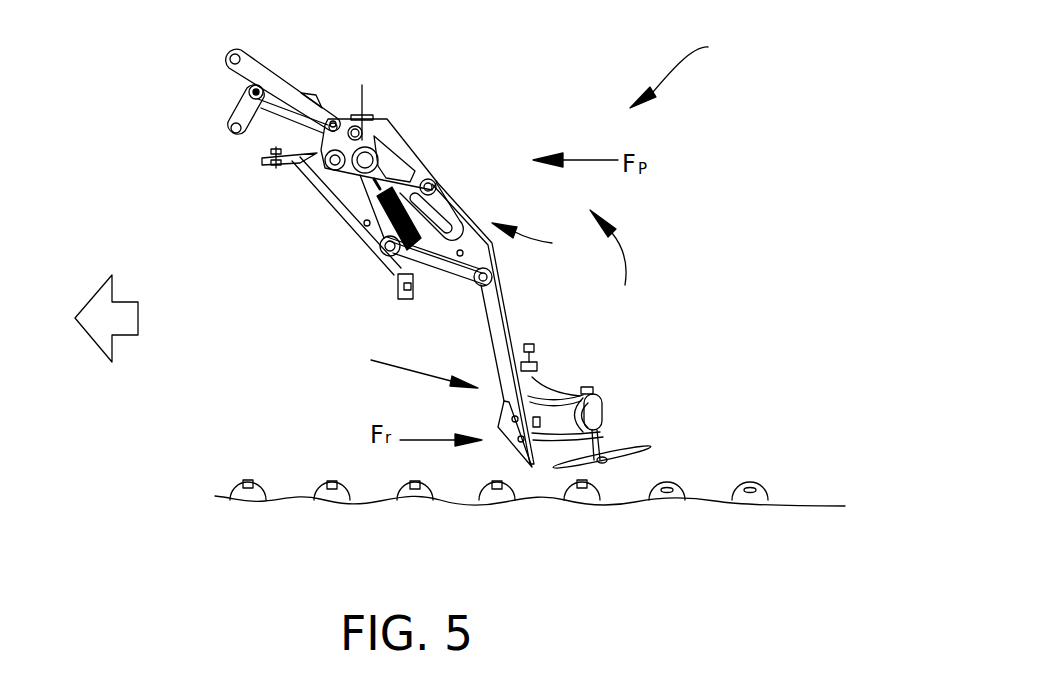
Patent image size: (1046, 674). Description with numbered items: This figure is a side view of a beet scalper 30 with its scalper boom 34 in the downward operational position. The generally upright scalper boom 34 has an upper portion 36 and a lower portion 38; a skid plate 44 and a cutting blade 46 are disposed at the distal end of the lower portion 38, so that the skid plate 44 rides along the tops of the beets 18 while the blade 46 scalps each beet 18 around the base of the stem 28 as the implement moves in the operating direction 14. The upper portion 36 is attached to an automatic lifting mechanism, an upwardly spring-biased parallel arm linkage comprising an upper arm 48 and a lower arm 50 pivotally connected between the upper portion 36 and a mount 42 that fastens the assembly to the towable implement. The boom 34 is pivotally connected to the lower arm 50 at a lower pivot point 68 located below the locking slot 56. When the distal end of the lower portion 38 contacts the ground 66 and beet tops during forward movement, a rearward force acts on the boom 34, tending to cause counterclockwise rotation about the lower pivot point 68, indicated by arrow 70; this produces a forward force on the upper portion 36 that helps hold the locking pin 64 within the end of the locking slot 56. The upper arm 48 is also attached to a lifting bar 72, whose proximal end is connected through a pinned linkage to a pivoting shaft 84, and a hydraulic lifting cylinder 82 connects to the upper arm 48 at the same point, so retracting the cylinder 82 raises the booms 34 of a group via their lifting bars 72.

The operating direction 14 is at (125, 298).
The beets 18 is at (313, 494).
The stem 28 is at (254, 487).
The beet scalper 30 is at (684, 71).
The scalper boom 34 is at (492, 320).
The upper portion 36 is at (538, 241).
The lower portion 38 is at (408, 369).
The mount 42 is at (338, 195).
The skid plate 44 is at (516, 445).
The cutting blade 46 is at (632, 445).
The upper arm 48 is at (395, 145).
The lower arm 50 is at (398, 281).
The locking slot 56 is at (433, 223).
The locking pin 64 is at (433, 182).
The ground 66 is at (218, 496).
The lower pivot point 68 is at (478, 284).
The arrow 70 is at (623, 248).
The lifting bar 72 is at (252, 92).
The hydraulic lifting cylinder 82 is at (242, 62).
The pivoting shaft 84 is at (230, 132).